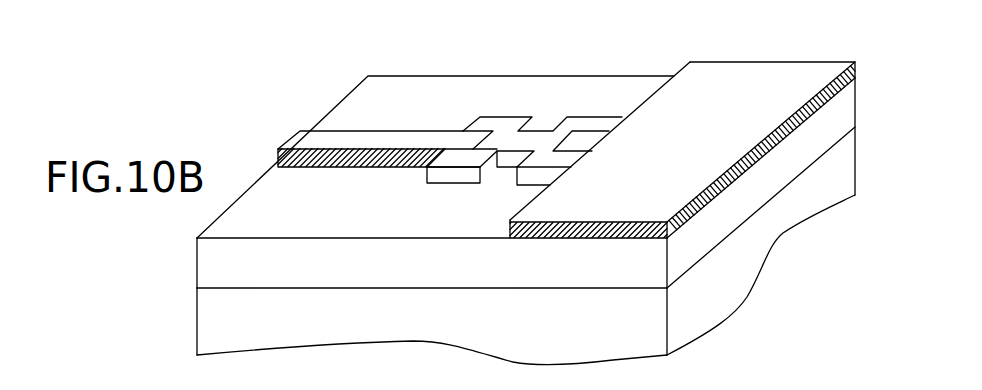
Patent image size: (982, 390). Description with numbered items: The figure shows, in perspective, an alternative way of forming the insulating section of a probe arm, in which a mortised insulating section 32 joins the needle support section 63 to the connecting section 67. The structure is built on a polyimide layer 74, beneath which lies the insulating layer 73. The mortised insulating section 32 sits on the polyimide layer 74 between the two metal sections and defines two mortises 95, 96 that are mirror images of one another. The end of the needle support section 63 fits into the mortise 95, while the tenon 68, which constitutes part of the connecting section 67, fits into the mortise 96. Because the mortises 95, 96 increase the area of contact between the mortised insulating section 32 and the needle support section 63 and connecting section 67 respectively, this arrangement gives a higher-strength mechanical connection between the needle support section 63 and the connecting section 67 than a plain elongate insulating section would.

The mortised insulating section 32 is at (505, 125).
The needle support section 63 is at (328, 138).
The connecting section 67 is at (765, 87).
The tenon 68 is at (613, 133).
The insulating layer 73 is at (207, 323).
The polyimide layer 74 is at (207, 268).
The mortise 95 is at (482, 137).
The mortise 96 is at (592, 142).